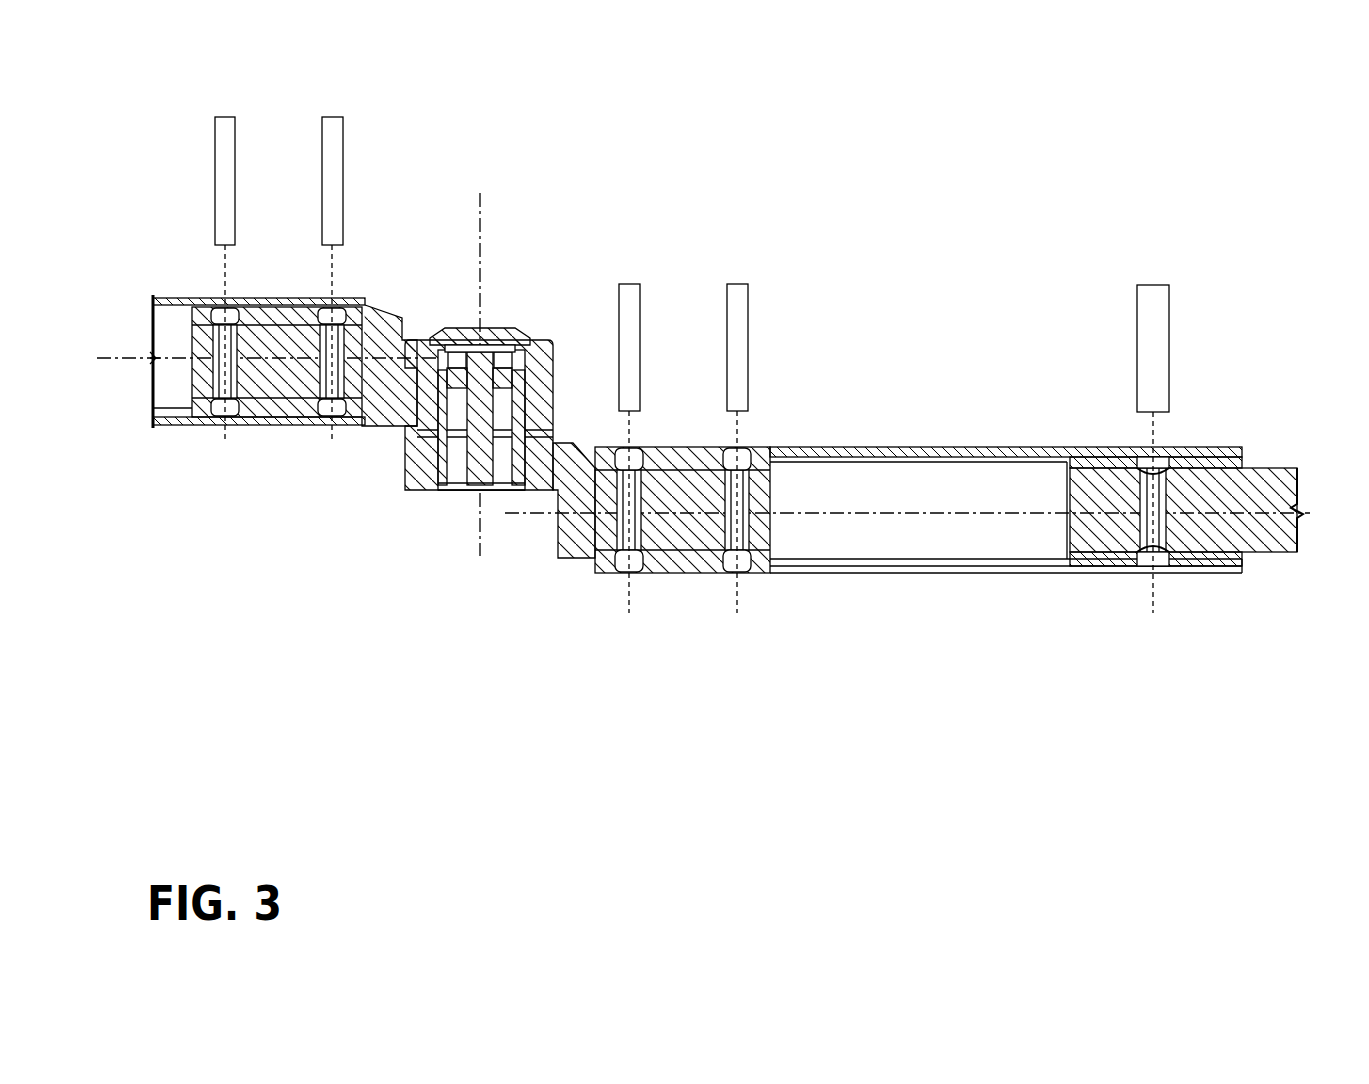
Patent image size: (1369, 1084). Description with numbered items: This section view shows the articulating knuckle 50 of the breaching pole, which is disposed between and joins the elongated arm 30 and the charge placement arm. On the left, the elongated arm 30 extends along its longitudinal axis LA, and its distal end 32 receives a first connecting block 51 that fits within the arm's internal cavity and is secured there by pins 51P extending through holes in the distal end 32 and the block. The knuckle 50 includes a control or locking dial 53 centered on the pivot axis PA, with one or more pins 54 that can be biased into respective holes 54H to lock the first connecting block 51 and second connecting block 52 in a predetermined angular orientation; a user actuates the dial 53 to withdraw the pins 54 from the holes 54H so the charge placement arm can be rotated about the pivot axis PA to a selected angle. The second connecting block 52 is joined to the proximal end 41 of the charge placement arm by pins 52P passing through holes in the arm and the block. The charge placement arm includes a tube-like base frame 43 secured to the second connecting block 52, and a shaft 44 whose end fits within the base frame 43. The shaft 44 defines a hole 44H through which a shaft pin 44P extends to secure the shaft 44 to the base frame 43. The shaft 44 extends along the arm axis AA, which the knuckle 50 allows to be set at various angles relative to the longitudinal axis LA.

The elongated arm 30 is at (200, 298).
The distal end 32 is at (205, 425).
The proximal end 41 is at (610, 575).
The base frame 43 is at (865, 448).
The shaft 44 is at (1265, 485).
The hole 44H is at (1120, 555).
The shaft pin 44P is at (1137, 320).
The articulating knuckle 50 is at (497, 310).
The first connecting block 51 is at (290, 383).
The pins 51P is at (322, 155).
The second connecting block 52 is at (683, 540).
The pins 52P is at (727, 322).
The locking dial 53 is at (490, 378).
The pin 54 is at (545, 378).
The hole 54H is at (430, 492).
The longitudinal axis LA is at (112, 355).
The pivot axis PA is at (480, 215).
The arm axis AA is at (895, 513).